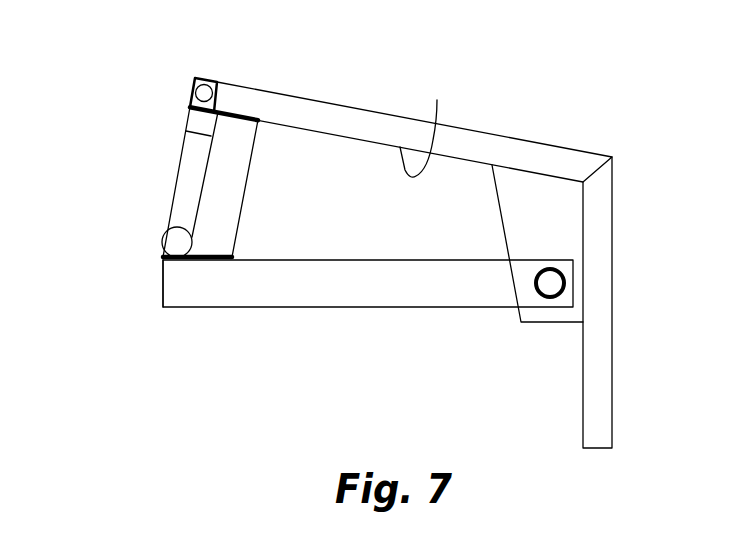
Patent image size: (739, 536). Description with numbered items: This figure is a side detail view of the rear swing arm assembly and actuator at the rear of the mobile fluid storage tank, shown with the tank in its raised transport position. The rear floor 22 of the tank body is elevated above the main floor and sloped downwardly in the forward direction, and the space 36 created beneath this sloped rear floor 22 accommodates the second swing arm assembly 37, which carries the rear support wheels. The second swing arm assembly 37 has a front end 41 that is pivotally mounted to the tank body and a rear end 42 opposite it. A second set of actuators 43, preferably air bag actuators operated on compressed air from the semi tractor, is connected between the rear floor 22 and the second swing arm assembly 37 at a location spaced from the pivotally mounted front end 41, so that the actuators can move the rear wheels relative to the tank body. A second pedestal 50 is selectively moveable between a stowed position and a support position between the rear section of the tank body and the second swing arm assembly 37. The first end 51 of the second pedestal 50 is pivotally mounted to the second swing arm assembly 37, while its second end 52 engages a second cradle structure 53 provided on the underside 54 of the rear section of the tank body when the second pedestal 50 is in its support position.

The rear floor 22 is at (283, 103).
The space 36 is at (333, 157).
The second swing arm assembly 37 is at (320, 293).
The front end 41 is at (532, 299).
The rear end 42 is at (173, 302).
The second set of actuators 43 is at (230, 197).
The second pedestal 50 is at (187, 177).
The first end 51 is at (175, 243).
The second end 52 is at (190, 127).
The second cradle structure 53 is at (190, 112).
The underside 54 is at (437, 100).